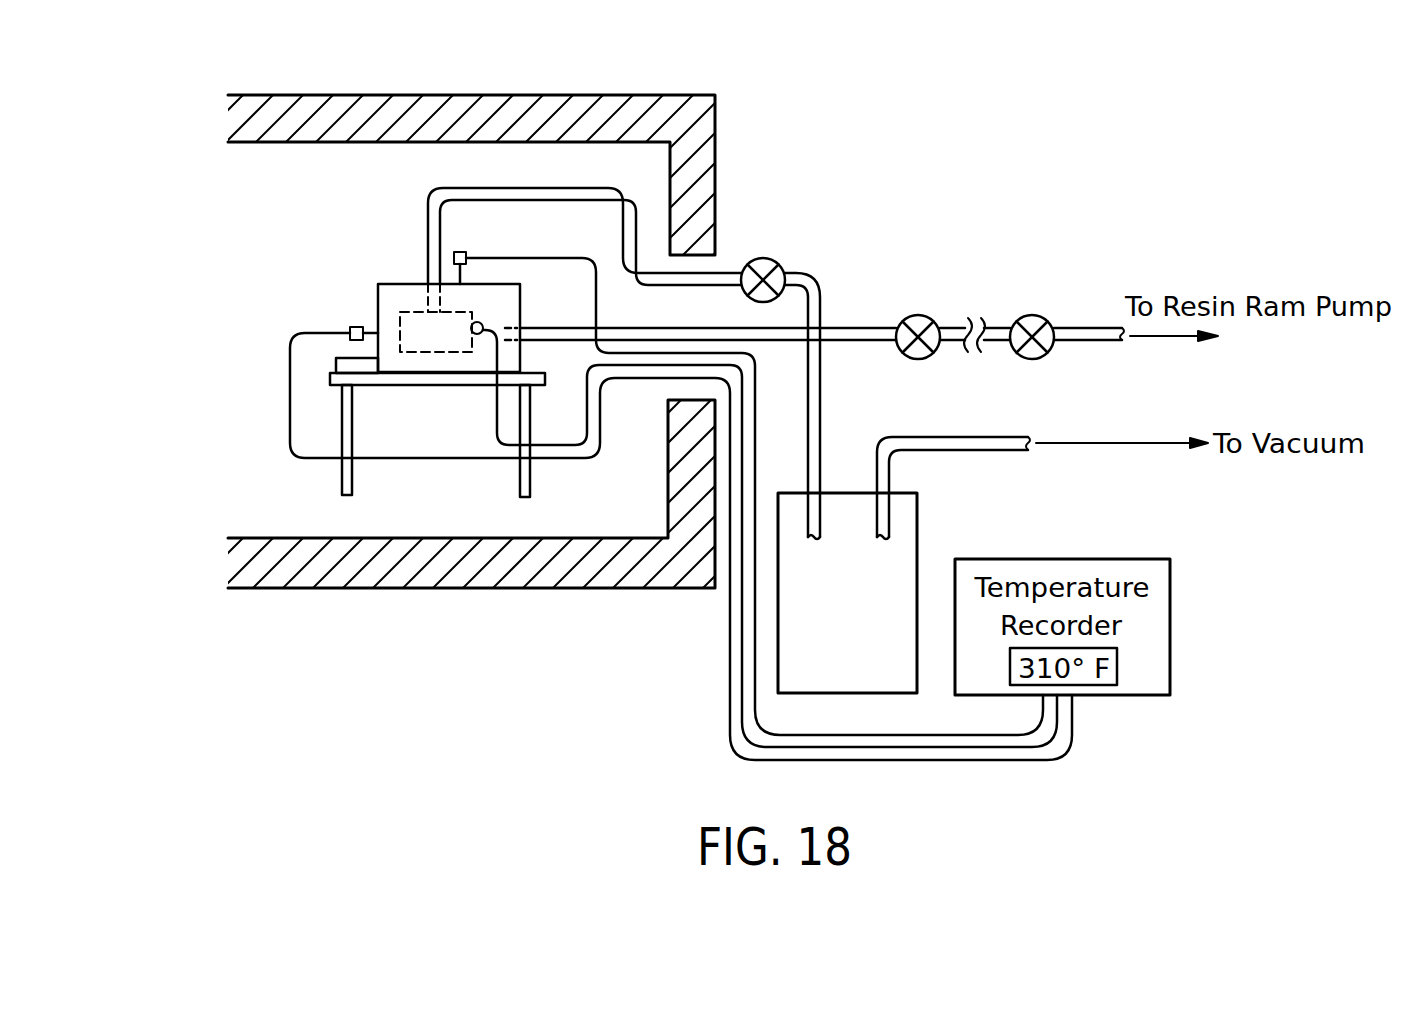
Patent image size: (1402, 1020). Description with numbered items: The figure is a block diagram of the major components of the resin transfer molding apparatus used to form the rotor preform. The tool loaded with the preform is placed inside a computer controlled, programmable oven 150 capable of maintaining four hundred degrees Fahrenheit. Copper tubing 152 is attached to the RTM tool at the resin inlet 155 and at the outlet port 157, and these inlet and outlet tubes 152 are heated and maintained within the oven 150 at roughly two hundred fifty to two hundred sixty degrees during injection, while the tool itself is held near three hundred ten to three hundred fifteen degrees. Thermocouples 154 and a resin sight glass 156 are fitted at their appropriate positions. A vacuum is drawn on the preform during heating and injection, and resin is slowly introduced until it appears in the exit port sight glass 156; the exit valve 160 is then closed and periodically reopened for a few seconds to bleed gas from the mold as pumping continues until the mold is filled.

The programmable oven 150 is at (418, 318).
The copper tubing 152 is at (492, 188).
The thermocouples 154 is at (351, 327).
The resin inlet 155 is at (513, 325).
The resin sight glass 156 is at (917, 528).
The outlet port 157 is at (428, 282).
The exit valve 160 is at (1018, 320).